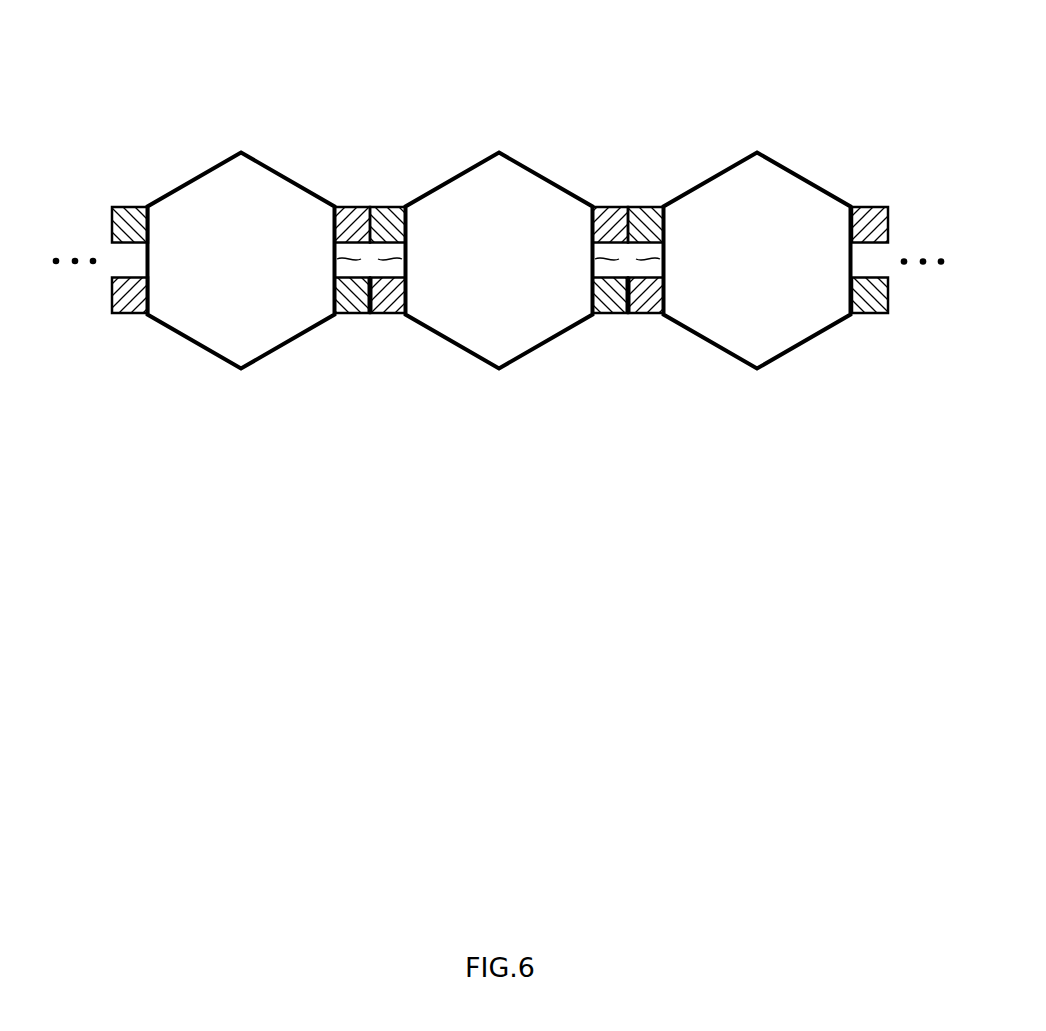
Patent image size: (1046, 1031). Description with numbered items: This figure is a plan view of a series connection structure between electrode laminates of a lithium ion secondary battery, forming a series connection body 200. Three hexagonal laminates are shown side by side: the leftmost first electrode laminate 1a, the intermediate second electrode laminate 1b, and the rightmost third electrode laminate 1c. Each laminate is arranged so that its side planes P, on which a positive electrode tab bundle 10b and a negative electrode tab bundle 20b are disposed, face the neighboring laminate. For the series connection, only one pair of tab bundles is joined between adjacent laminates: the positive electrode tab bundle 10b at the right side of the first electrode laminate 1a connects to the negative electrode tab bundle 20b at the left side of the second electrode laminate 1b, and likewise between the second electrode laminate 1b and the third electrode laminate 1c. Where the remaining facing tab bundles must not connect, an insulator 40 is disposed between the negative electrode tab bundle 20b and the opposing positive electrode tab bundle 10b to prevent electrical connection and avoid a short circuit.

The series connection body 200 is at (667, 80).
The first electrode laminate 1a is at (265, 200).
The second electrode laminate 1b is at (523, 200).
The third electrode laminate 1c is at (781, 200).
The positive electrode tab bundle 10b is at (499, 262).
The negative electrode tab bundle 20b is at (499, 262).
The insulator 40 is at (496, 344).
The side plane P is at (498, 259).